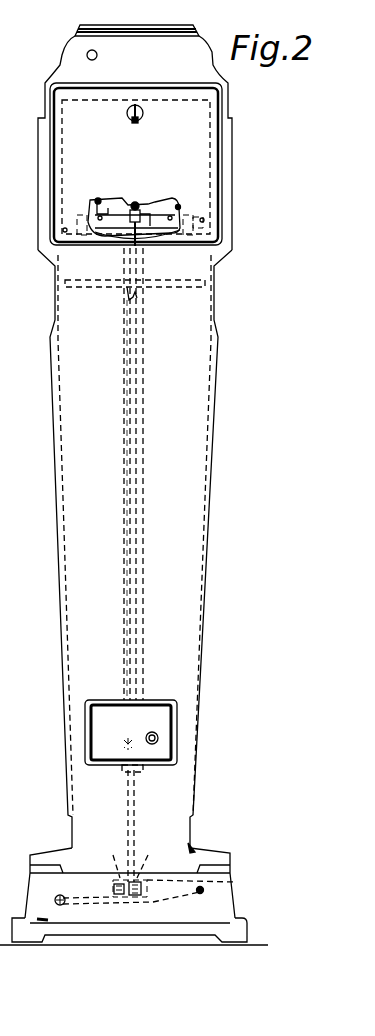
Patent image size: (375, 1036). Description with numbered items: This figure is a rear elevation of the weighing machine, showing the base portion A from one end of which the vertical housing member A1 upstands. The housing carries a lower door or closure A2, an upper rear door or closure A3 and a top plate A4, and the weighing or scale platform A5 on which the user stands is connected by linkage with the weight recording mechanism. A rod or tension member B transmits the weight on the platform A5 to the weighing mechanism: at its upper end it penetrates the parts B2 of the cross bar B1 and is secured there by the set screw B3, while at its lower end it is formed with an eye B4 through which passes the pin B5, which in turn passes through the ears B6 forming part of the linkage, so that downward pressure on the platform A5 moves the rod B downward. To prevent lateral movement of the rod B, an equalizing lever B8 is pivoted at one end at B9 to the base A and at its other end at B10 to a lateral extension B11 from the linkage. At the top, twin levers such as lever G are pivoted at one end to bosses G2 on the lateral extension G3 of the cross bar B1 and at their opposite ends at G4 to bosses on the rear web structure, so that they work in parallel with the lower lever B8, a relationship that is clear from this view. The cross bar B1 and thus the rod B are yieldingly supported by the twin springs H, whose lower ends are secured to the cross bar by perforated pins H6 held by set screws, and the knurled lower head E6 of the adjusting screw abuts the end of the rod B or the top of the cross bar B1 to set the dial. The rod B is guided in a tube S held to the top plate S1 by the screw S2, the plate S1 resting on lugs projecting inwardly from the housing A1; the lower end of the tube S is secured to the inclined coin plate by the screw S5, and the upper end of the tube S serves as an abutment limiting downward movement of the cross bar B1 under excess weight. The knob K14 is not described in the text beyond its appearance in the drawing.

The base portion A is at (228, 932).
The vertical housing member A1 is at (195, 520).
The lower door or closure A2 is at (162, 720).
The upper rear door or closure A3 is at (198, 132).
The top plate A4 is at (80, 25).
The weighing or scale platform A5 is at (213, 852).
The pin K14 is at (87, 55).
The rod or tension member B is at (133, 597).
The bar or cross bar B1 is at (160, 235).
The parts of the bar B2 is at (142, 214).
The set screw B3 is at (127, 202).
The eye B4 is at (128, 897).
The pin B5 is at (120, 897).
The ears B6 is at (125, 859).
The equalizing lever B8 is at (152, 902).
The pivot B9 is at (57, 906).
The pivot B10 is at (203, 889).
The lateral extension B11 is at (172, 880).
The knurled lower head E6 is at (135, 205).
The twin lever G is at (150, 240).
The bosses G2 is at (212, 223).
The lateral extension G3 is at (203, 220).
The pivot G4 is at (65, 231).
The twin springs H is at (98, 199).
The perforated pins H6 is at (92, 209).
The tube S is at (143, 433).
The top plate S1 is at (65, 283).
The screw S2 is at (132, 295).
The screw S5 is at (122, 745).